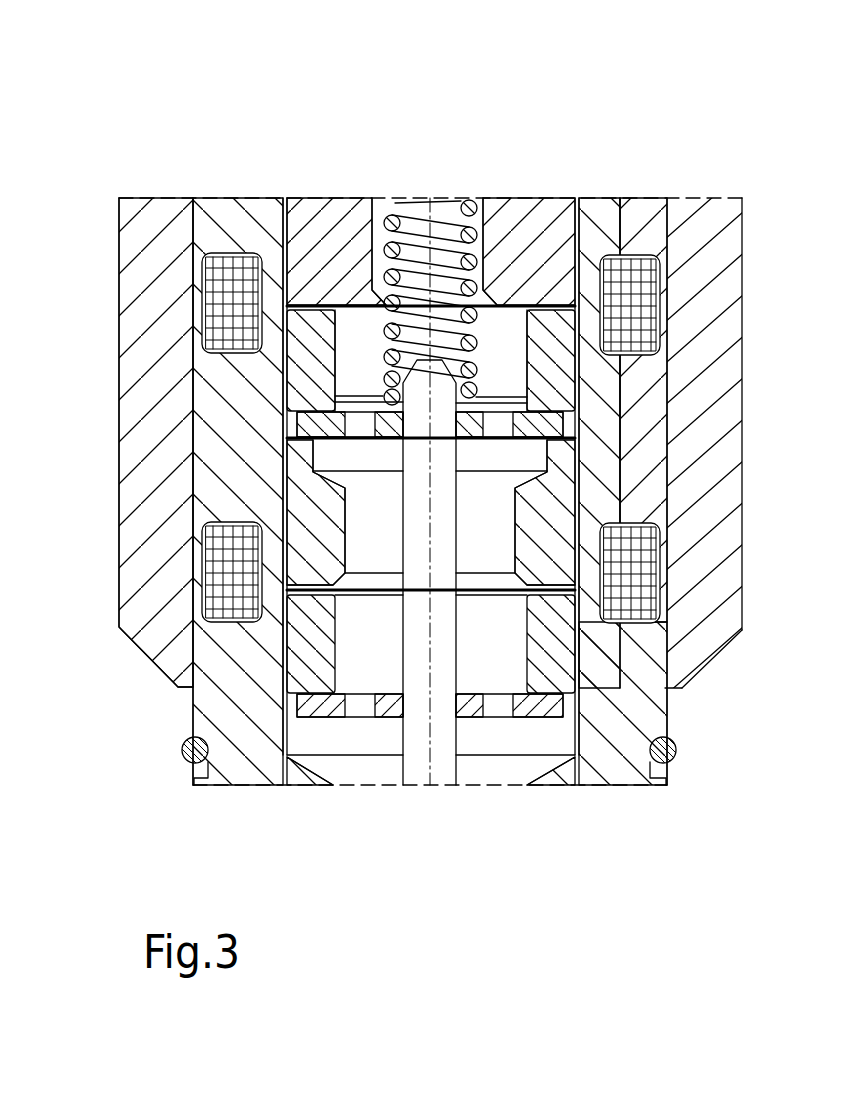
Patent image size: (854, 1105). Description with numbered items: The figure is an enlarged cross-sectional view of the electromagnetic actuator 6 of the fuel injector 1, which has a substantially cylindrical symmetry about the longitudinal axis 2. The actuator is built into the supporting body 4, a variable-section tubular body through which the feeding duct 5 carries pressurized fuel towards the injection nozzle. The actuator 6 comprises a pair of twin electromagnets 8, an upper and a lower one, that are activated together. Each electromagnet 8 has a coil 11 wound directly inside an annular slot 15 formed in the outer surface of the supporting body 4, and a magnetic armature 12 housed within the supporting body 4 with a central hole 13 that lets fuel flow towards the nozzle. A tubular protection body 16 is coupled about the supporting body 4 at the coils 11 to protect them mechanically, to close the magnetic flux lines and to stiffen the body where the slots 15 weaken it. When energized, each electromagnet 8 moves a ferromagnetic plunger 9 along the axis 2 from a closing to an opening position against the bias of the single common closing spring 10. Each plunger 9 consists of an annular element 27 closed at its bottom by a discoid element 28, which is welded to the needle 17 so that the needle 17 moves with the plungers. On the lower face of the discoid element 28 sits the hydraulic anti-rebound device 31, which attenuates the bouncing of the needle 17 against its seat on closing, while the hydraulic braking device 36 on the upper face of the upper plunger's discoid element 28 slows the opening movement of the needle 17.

The fuel injector 1 is at (696, 104).
The longitudinal axis 2 is at (428, 198).
The supporting body 4 is at (232, 215).
The feeding duct 5 is at (363, 774).
The electromagnetic actuator 6 is at (725, 690).
The electromagnet 8 is at (752, 297).
The plunger 9 is at (582, 374).
The closing spring 10 is at (469, 200).
The coil 11 is at (227, 313).
The magnetic armature 12 is at (531, 215).
The central hole 13 is at (378, 237).
The annular slot 15 is at (253, 332).
The protection body 16 is at (163, 432).
The needle 17 is at (442, 770).
The annular element 27 is at (320, 372).
The discoid element 28 is at (547, 428).
The anti-rebound device 31 is at (489, 455).
The braking device 36 is at (496, 404).